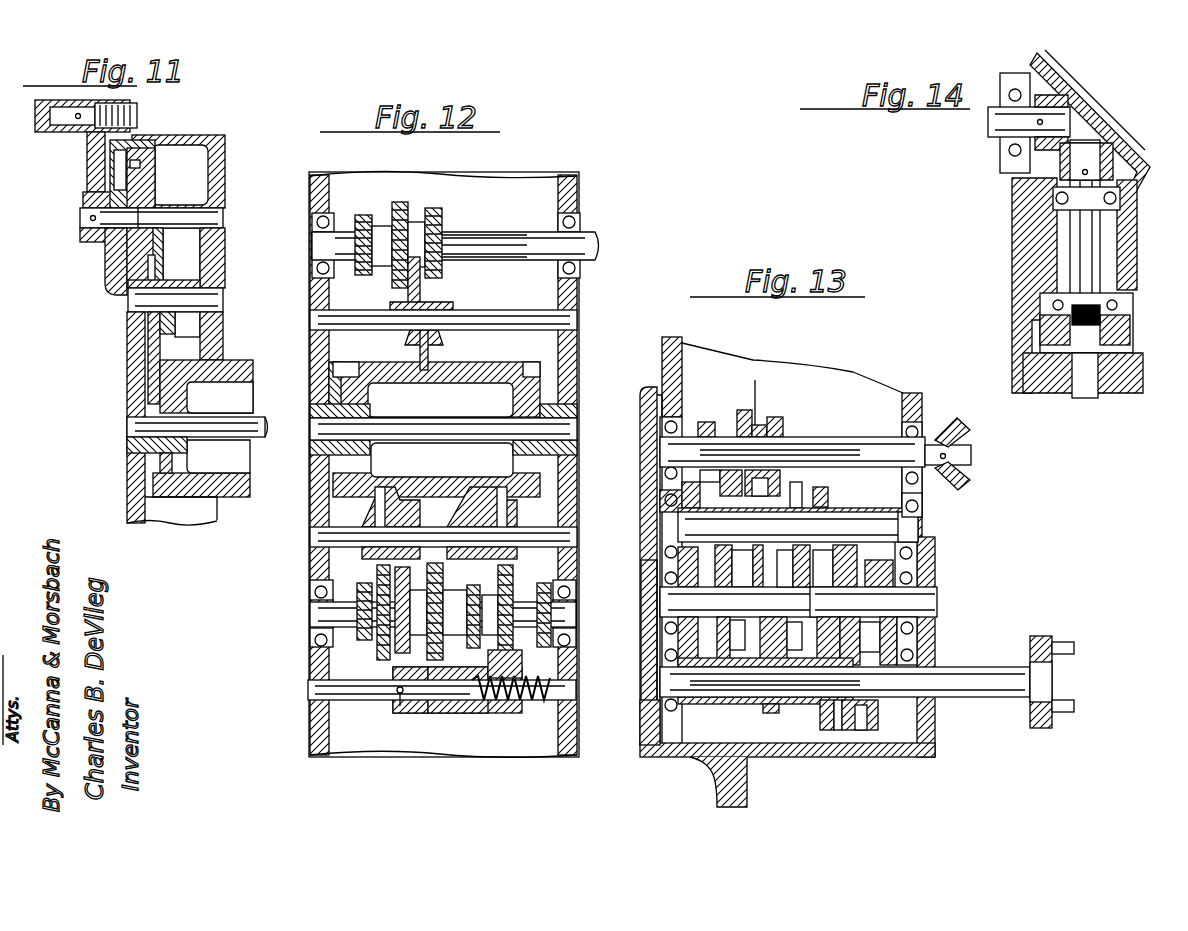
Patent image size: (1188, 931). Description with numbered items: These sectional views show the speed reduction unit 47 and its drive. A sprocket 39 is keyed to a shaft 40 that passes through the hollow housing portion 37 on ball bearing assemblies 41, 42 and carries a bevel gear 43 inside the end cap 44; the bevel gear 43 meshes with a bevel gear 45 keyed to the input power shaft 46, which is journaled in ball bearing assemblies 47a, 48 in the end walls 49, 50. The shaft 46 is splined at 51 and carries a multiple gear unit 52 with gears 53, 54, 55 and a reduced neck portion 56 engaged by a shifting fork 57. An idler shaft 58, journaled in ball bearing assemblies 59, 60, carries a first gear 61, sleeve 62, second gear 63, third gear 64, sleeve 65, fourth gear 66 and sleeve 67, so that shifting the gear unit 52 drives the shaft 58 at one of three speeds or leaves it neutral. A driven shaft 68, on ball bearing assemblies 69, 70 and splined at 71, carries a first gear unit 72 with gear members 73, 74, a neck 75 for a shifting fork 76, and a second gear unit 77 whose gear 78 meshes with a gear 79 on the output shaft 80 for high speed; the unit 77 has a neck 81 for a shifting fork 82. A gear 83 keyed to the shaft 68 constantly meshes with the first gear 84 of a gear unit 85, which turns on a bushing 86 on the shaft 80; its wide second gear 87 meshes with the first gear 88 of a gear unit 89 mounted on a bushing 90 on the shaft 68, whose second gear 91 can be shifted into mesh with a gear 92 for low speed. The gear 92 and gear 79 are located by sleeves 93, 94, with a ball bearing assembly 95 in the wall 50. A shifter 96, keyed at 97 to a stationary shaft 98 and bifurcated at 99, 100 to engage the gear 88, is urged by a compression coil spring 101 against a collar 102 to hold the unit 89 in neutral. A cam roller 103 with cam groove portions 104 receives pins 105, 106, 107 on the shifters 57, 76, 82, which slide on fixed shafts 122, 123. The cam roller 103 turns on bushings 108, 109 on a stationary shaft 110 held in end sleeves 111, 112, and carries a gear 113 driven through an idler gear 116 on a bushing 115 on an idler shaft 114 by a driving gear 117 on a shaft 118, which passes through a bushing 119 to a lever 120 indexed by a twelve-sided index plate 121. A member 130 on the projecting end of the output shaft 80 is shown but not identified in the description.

In FIG. 14, the hollow housing portion 37 is at (1125, 265).
In FIG. 14, the sprocket 39 is at (1118, 385).
In FIG. 14, the shaft 40 is at (1090, 262).
In FIG. 14, the ball bearing assembly 41 is at (1120, 298).
In FIG. 14, the ball bearing assembly 42 is at (1125, 200).
In FIG. 14, the bevel gear 43 is at (1110, 150).
In FIG. 14, the end cap 44 is at (1112, 118).
In FIG. 13, the bevel gear 45 is at (968, 476).
In FIG. 14, the bevel gear 45 is at (1060, 95).
In FIG. 12, the input power shaft 46 is at (540, 236).
In FIG. 13, the input power shaft 46 is at (971, 455).
In FIG. 14, the input power shaft 46 is at (1082, 106).
In FIG. 12, the speed reduction unit 47 is at (302, 538).
In FIG. 13, the speed reduction unit 47 is at (790, 772).
In FIG. 12, the ball bearing assembly 47a is at (583, 222).
In FIG. 13, the ball bearing assembly 47a is at (920, 425).
In FIG. 12, the ball bearing assembly 48 is at (314, 222).
In FIG. 13, the ball bearing assembly 48 is at (678, 420).
In FIG. 12, the end wall 49 is at (576, 195).
In FIG. 13, the end wall 49 is at (917, 398).
In FIG. 11, the end wall 50 is at (132, 355).
In FIG. 12, the end wall 50 is at (316, 188).
In FIG. 13, the end wall 50 is at (666, 378).
In FIG. 13, the splined portion 51 is at (800, 444).
In FIG. 12, the multiple gear unit 52 is at (386, 204).
In FIG. 13, the multiple gear unit 52 is at (763, 410).
In FIG. 12, the gear 53 is at (440, 212).
In FIG. 13, the gear 53 is at (783, 420).
In FIG. 12, the gear 54 is at (402, 207).
In FIG. 13, the gear 54 is at (742, 410).
In FIG. 12, the gear 55 is at (362, 216).
In FIG. 13, the gear 55 is at (705, 422).
In FIG. 13, the reduced neck portion 56 is at (780, 402).
In FIG. 12, the shifting fork 57 is at (420, 285).
In FIG. 13, the splined idler shaft 58 is at (840, 530).
In FIG. 13, the ball bearing assembly 59 is at (922, 508).
In FIG. 13, the ball bearing assembly 60 is at (655, 492).
In FIG. 13, the first gear 61 is at (700, 495).
In FIG. 13, the sleeve 62 is at (730, 496).
In FIG. 13, the second gear 63 is at (717, 482).
In FIG. 13, the third gear 64 is at (765, 500).
In FIG. 13, the sleeve 65 is at (800, 508).
In FIG. 13, the fourth gear 66 is at (826, 494).
In FIG. 13, the sleeve 67 is at (872, 515).
In FIG. 12, the driven shaft 68 is at (576, 615).
In FIG. 13, the driven shaft 68 is at (905, 604).
In FIG. 13, the ball bearing assembly 69 is at (925, 575).
In FIG. 13, the ball bearing assembly 70 is at (660, 590).
In FIG. 13, the splined portion 71 is at (766, 593).
In FIG. 12, the first gear unit 72 is at (371, 651).
In FIG. 13, the first gear unit 72 is at (702, 572).
In FIG. 13, the gear member 73 is at (715, 640).
In FIG. 13, the gear member 74 is at (688, 641).
In FIG. 13, the reduced neck portion 75 is at (734, 633).
In FIG. 12, the shifting fork 76 is at (390, 568).
In FIG. 12, the second gear unit 77 is at (443, 640).
In FIG. 13, the second gear unit 77 is at (772, 628).
In FIG. 12, the gear 78 is at (418, 573).
In FIG. 13, the gear 78 is at (775, 644).
In FIG. 13, the gear 79 is at (770, 713).
In FIG. 13, the output shaft 80 is at (806, 697).
In FIG. 13, the reduced neck portion 81 is at (798, 582).
In FIG. 12, the shifting fork 82 is at (450, 580).
In FIG. 12, the gear 83 is at (572, 580).
In FIG. 13, the gear 83 is at (917, 585).
In FIG. 13, the first gear 84 is at (917, 643).
In FIG. 13, the gear unit 85 is at (874, 727).
In FIG. 13, the cylindrical bearing bushing 86 is at (910, 757).
In FIG. 13, the second gear member 87 is at (847, 745).
In FIG. 12, the first gear 88 is at (513, 575).
In FIG. 13, the first gear 88 is at (845, 566).
In FIG. 12, the gear unit 89 is at (493, 588).
In FIG. 13, the gear unit 89 is at (868, 587).
In FIG. 13, the cylindrical bearing bushing 90 is at (868, 641).
In FIG. 13, the second gear member 91 is at (820, 640).
In FIG. 13, the gear 92 is at (838, 728).
In FIG. 13, the sleeve 93 is at (822, 720).
In FIG. 13, the sleeve 94 is at (700, 704).
In FIG. 13, the ball bearing assembly 95 is at (645, 725).
In FIG. 12, the shifter 96 is at (445, 710).
In FIG. 12, the key 97 is at (398, 700).
In FIG. 12, the stationary shaft 98 is at (350, 698).
In FIG. 12, the bifurcation 99 is at (522, 665).
In FIG. 12, the bifurcation 100 is at (500, 665).
In FIG. 12, the compression coil spring 101 is at (538, 702).
In FIG. 12, the collar 102 is at (395, 672).
In FIG. 11, the cam roller 103 is at (232, 490).
In FIG. 12, the cam roller 103 is at (478, 366).
In FIG. 12, the cam groove portions 104 is at (364, 358).
In FIG. 12, the pin 105 is at (430, 352).
In FIG. 12, the pin 106 is at (386, 505).
In FIG. 12, the pin 107 is at (499, 508).
In FIG. 12, the bushing 108 is at (368, 412).
In FIG. 12, the bushing 109 is at (512, 412).
In FIG. 12, the stationary shaft 110 is at (422, 443).
In FIG. 12, the end sleeve 111 is at (316, 410).
In FIG. 12, the end sleeve 112 is at (577, 414).
In FIG. 11, the gear 113 is at (160, 463).
In FIG. 12, the gear 113 is at (318, 375).
In FIG. 11, the stationary idler shaft 114 is at (205, 296).
In FIG. 11, the bearing bushing 115 is at (162, 325).
In FIG. 11, the idler gear 116 is at (156, 262).
In FIG. 11, the driving gear 117 is at (158, 240).
In FIG. 11, the shaft 118 is at (90, 222).
In FIG. 11, the bushing 119 is at (84, 199).
In FIG. 11, the lever 120 is at (90, 160).
In FIG. 11, the twelve-sided index plate 121 is at (105, 270).
In FIG. 12, the fixed shaft 122 is at (490, 315).
In FIG. 12, the fixed shaft 123 is at (527, 532).
In FIG. 13, the coupling 130 is at (1045, 640).